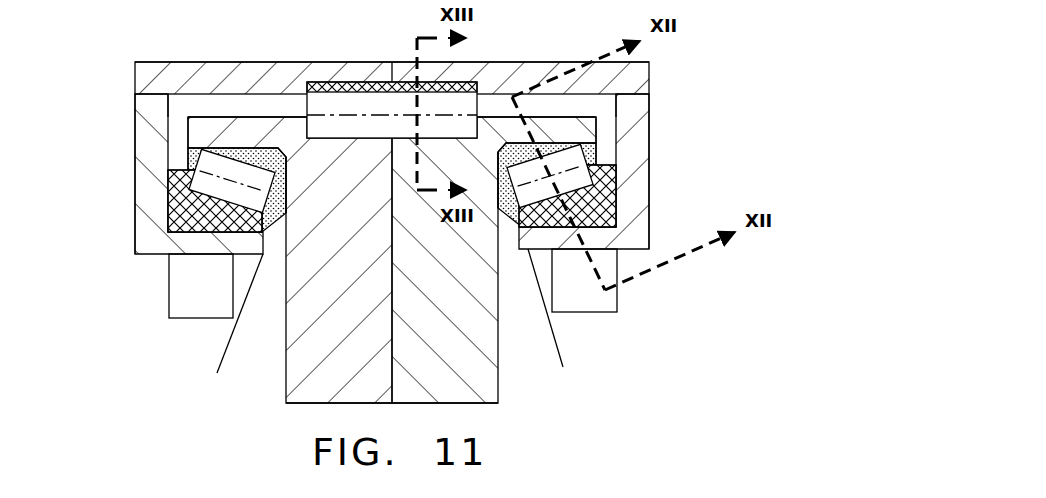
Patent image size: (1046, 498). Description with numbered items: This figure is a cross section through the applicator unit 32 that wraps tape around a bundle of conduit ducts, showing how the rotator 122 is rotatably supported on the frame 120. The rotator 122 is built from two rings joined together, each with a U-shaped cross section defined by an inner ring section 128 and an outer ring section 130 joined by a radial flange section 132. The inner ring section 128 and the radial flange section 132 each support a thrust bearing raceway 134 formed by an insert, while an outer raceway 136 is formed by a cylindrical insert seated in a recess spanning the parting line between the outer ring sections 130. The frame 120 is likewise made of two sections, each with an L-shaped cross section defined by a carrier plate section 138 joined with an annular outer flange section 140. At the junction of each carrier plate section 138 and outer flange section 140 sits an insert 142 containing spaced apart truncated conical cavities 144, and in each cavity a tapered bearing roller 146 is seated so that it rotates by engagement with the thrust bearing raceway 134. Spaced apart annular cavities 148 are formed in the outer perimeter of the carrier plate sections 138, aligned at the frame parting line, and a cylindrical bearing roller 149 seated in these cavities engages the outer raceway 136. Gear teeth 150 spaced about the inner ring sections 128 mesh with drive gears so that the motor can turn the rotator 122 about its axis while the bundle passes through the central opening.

The applicator unit 32 is at (63, 336).
The frame 120 is at (435, 397).
The rotator 122 is at (392, 42).
The inner ring section 128 is at (217, 373).
The outer ring section 130 is at (388, 58).
The radial flange section 132 is at (395, 174).
The thrust bearing raceway 134 is at (391, 174).
The outer raceway 136 is at (392, 69).
The carrier plate section 138 is at (392, 232).
The annular outer flange section 140 is at (392, 133).
The insert 142 is at (391, 202).
The truncated conical cavity 144 is at (392, 173).
The tapered bearing roller 146 is at (406, 231).
The annular cavity 148 is at (392, 176).
The cylindrical bearing roller 149 is at (392, 110).
The gear teeth 150 is at (393, 301).